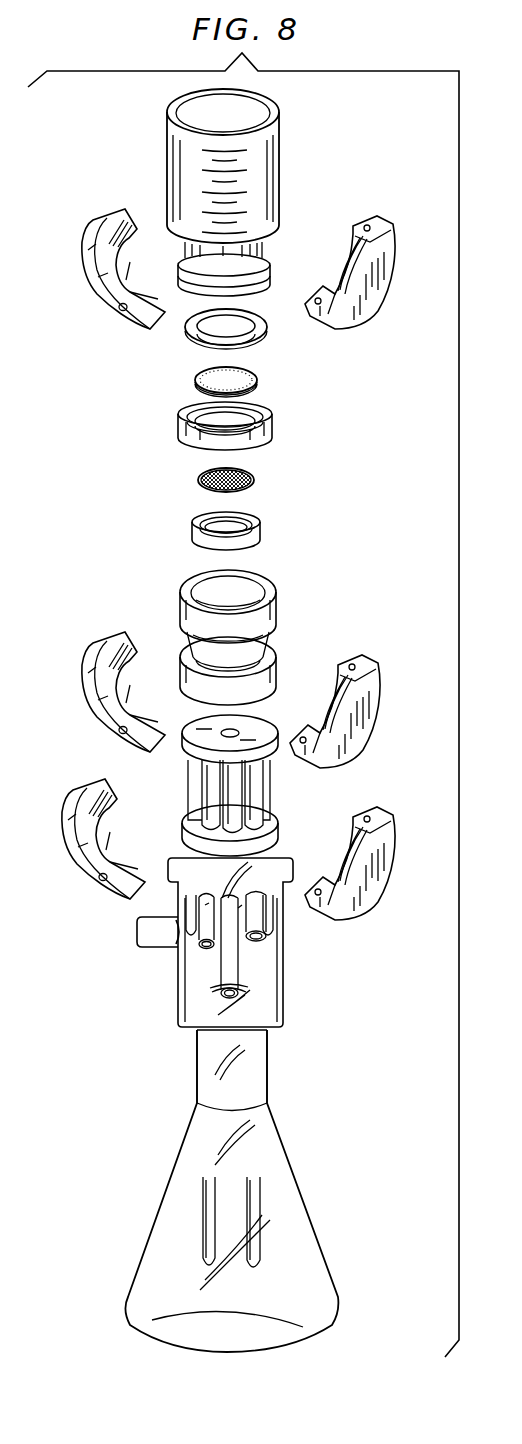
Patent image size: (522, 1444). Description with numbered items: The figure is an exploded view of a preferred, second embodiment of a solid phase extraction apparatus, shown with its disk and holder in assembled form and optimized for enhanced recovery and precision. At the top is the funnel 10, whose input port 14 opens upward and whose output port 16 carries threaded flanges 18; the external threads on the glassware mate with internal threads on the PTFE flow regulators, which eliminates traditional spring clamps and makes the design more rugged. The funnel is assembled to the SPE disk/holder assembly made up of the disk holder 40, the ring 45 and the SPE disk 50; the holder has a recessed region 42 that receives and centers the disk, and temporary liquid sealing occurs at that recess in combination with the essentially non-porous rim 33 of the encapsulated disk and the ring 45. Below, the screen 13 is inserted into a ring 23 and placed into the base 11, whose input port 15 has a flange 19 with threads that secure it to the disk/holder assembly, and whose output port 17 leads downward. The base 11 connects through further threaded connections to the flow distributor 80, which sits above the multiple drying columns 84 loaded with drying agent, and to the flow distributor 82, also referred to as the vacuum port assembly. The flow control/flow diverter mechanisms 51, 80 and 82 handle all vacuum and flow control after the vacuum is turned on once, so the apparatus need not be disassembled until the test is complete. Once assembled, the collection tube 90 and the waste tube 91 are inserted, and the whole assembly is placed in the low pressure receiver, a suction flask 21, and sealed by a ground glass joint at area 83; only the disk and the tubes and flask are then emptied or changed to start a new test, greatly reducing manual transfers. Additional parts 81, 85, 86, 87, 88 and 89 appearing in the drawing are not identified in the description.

The funnel 10 is at (282, 166).
The input port 14 is at (218, 126).
The flange 18 is at (172, 263).
The output port 16 is at (283, 313).
The flow control/flow diverter mechanism 51 is at (98, 283).
The ring 45 is at (266, 334).
The non-porous rim 33 is at (256, 382).
The SPE disk 50 is at (197, 379).
The disk holder 40 is at (272, 427).
The recessed region 42 is at (186, 421).
The screen 13 is at (255, 475).
The ring 23 is at (262, 521).
The flange 19 is at (180, 606).
The input port 15 is at (240, 590).
The base 11 is at (255, 651).
The output port 17 is at (180, 711).
The flow distributor 80 is at (97, 708).
The rod cage 81 is at (227, 785).
The drying columns 84 is at (198, 797).
The cage top hole 85 is at (240, 733).
The flow distributor 82 is at (96, 896).
The ground glass joint area 83 is at (214, 980).
The side port 89 is at (137, 941).
The left tube 88 is at (200, 938).
The right tube 87 is at (265, 920).
The center tube 86 is at (232, 963).
The low pressure receiver 21 is at (237, 1191).
The waste tube 91 is at (203, 1210).
The collection tube 90 is at (260, 1203).